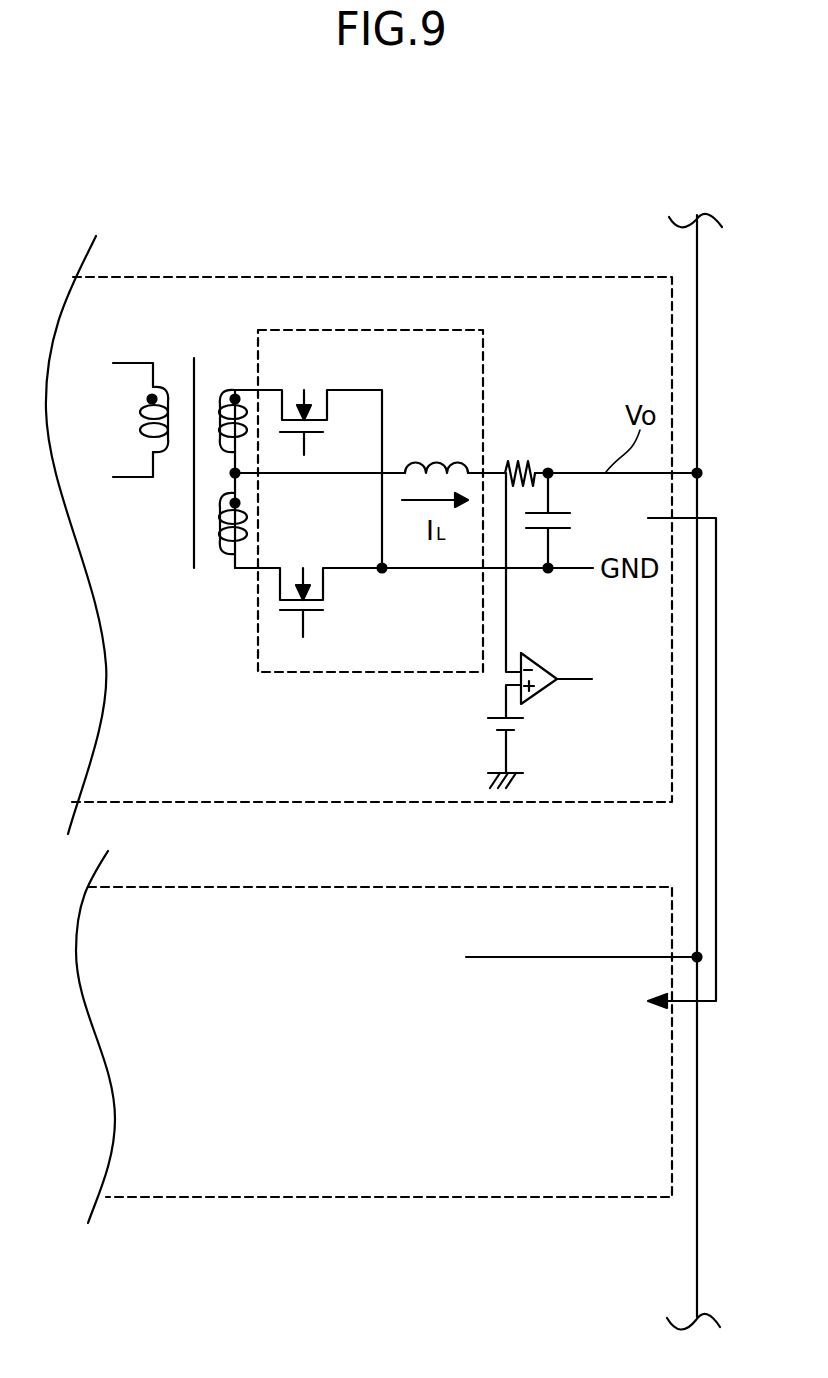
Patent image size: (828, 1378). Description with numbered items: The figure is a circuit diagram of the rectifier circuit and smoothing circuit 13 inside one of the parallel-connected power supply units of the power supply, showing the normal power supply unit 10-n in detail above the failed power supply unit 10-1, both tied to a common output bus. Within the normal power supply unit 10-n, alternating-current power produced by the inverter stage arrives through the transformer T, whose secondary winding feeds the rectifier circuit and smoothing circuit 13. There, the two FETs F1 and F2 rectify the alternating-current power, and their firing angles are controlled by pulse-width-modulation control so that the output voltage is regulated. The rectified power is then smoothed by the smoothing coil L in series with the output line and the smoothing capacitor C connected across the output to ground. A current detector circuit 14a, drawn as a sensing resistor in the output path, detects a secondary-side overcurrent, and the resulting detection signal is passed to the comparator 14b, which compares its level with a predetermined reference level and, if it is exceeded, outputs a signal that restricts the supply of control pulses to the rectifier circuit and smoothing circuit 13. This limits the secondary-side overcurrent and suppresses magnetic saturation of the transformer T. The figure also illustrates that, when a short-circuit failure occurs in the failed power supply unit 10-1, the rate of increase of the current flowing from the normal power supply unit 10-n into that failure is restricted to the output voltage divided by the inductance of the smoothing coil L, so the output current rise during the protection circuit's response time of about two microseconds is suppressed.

The power supply unit 10-n is at (448, 277).
The power supply unit 10-1 is at (448, 888).
The rectifier circuit and smoothing circuit 13 is at (388, 482).
The current detector circuit 14a is at (526, 465).
The comparator 14b is at (540, 662).
The transformer T is at (180, 432).
The FET F1 is at (298, 388).
The FET F2 is at (298, 566).
The smoothing coil L is at (436, 445).
The smoothing capacitor C is at (559, 520).